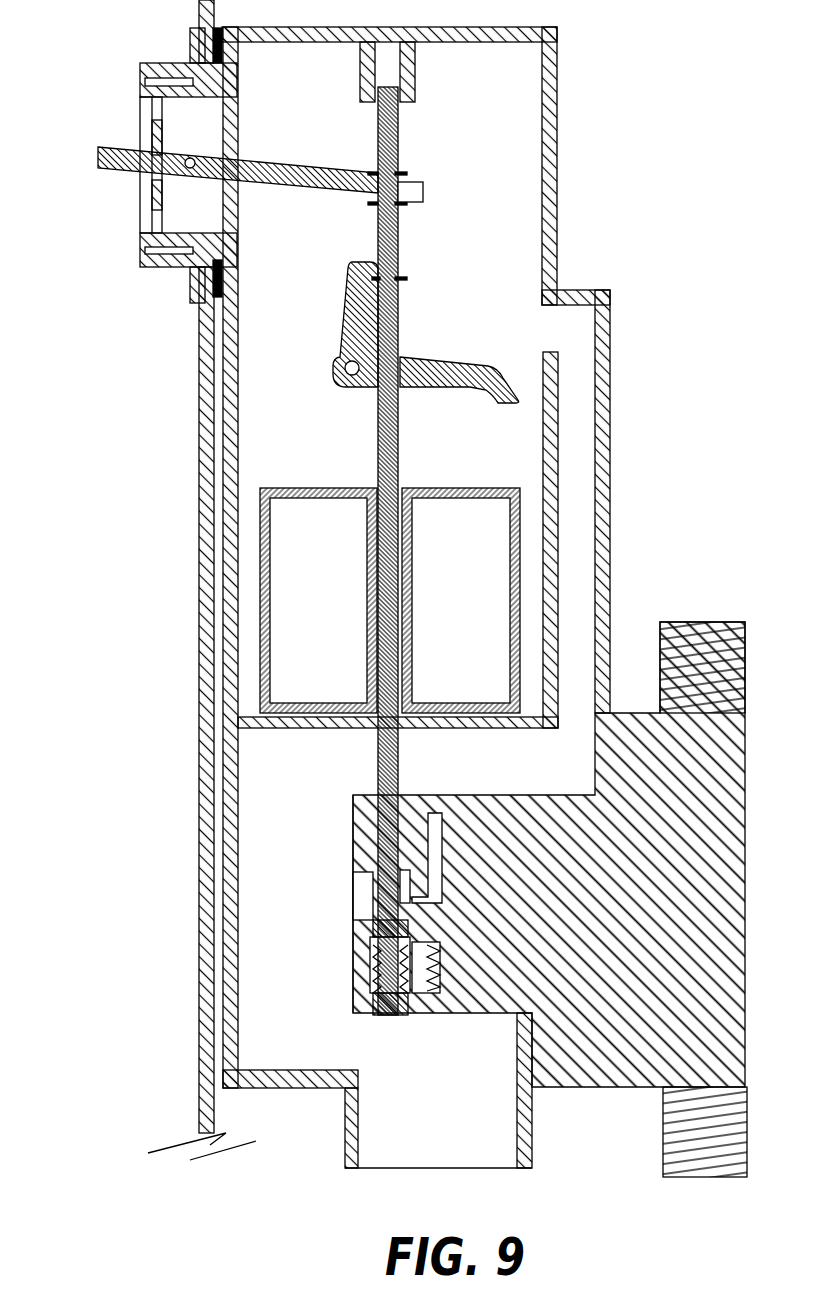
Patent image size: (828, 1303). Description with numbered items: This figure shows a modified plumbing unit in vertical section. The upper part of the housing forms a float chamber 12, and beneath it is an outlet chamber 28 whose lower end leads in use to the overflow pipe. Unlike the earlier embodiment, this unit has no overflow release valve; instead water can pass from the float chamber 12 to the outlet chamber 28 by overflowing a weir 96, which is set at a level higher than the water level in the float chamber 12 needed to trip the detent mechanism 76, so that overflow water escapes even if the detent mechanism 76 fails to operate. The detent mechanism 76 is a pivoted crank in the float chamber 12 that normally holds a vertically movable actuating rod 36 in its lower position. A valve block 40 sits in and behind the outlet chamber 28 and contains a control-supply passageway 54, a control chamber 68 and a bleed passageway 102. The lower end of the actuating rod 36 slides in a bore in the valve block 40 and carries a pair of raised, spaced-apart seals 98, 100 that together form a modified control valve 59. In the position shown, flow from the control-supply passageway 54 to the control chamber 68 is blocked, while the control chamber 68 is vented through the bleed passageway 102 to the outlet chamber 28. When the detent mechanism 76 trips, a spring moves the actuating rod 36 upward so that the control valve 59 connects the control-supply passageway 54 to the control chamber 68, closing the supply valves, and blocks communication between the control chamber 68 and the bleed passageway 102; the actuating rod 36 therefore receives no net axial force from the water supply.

The float chamber 12 is at (265, 373).
The outlet chamber 28 is at (577, 653).
The actuating rod 36 is at (395, 427).
The valve block 40 is at (580, 1070).
The control-supply passageway 54 is at (437, 988).
The control valve 59 is at (335, 935).
The control chamber 68 is at (437, 826).
The detent mechanism 76 is at (415, 330).
The weir 96 is at (556, 430).
The seal 98 is at (372, 1000).
The seal 100 is at (378, 933).
The bleed passageway 102 is at (352, 868).